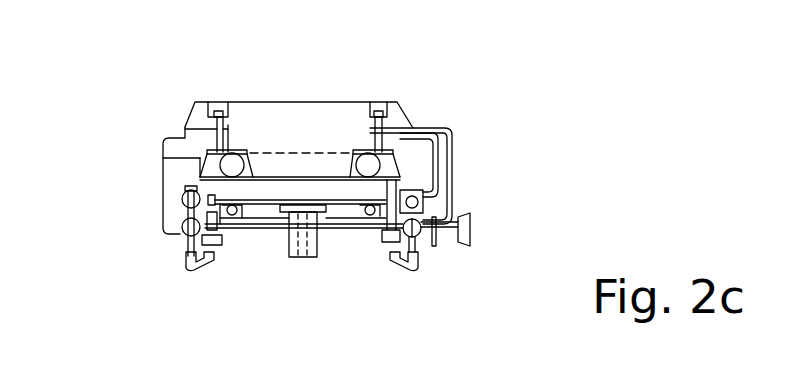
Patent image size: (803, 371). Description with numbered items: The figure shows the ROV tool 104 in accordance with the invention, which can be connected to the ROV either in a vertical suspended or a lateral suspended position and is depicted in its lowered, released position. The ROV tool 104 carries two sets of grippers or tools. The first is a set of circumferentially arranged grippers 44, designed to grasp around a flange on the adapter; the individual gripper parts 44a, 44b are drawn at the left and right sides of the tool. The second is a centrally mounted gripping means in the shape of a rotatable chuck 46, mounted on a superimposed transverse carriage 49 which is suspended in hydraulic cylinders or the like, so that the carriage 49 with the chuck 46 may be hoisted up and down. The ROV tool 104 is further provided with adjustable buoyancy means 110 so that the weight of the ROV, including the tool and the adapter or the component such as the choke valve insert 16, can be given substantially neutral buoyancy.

The ROV tool 104 is at (223, 93).
The adjustable buoyancy means 110 is at (308, 113).
The clamping screw 44a is at (180, 212).
The clamping block 44b is at (423, 200).
The grippers 44 is at (190, 265).
The transverse carriage 49 is at (258, 213).
The rotatable chuck 46 is at (320, 240).
The choke valve insert 16 is at (457, 238).